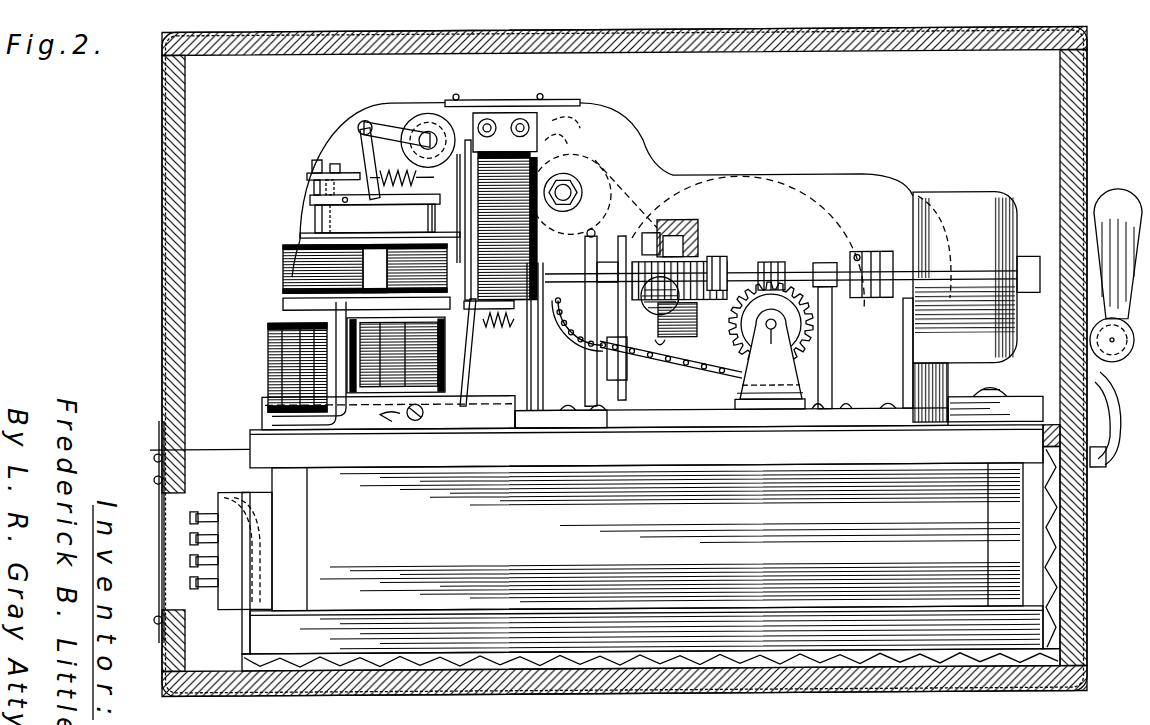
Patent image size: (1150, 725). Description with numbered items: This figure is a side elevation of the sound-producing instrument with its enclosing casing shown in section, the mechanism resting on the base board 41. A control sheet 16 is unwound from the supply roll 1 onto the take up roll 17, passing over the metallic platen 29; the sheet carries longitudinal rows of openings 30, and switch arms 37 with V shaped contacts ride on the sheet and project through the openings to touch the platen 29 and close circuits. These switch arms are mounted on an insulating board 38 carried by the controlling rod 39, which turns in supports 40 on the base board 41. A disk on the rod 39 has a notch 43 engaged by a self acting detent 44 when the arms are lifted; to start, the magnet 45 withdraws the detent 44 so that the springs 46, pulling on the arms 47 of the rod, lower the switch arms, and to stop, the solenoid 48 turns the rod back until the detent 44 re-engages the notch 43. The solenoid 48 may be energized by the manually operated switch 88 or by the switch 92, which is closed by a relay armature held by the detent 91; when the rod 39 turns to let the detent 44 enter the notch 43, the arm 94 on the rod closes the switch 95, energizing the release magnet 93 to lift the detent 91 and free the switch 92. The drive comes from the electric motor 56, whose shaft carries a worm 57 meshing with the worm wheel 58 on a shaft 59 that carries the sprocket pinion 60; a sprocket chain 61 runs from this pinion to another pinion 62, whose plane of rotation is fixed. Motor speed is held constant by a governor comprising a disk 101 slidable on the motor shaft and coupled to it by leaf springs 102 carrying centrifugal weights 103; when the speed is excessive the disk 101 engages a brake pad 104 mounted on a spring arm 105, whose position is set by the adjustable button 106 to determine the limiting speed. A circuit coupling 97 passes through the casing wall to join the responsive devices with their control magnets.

The supply roll 1 is at (302, 228).
The control sheet 16 is at (666, 222).
The take up roll 17 is at (818, 182).
The platen 29 is at (626, 194).
The openings 30 is at (374, 384).
The switch arms 37 is at (590, 120).
The insulating board 38 is at (514, 104).
The controlling rod 39 is at (426, 130).
The supports 40 is at (636, 136).
The base board 41 is at (448, 210).
The notch 43 is at (428, 178).
The detent 44 is at (560, 210).
The magnet 45 is at (538, 140).
The springs 46 is at (380, 170).
The arms 47 is at (497, 220).
The solenoid 48 is at (300, 256).
The electric motor 56 is at (968, 212).
The worm 57 is at (776, 266).
The worm wheel 58 is at (840, 320).
The shaft 59 is at (770, 359).
The sprocket pinion 60 is at (736, 336).
The sprocket chain 61 is at (671, 363).
The pinion 62 is at (636, 364).
The manually operated switch 88 is at (996, 395).
The detent 91 is at (490, 327).
The switch 92 is at (468, 362).
The release magnet 93 is at (280, 358).
The arm 94 is at (308, 180).
The switch 95 is at (336, 220).
The circuit coupling 97 is at (200, 540).
The disk 101 is at (585, 262).
The leaf springs 102 is at (628, 262).
The centrifugal weights 103 is at (690, 220).
The brake pad 104 is at (608, 321).
The spring arm 105 is at (607, 430).
The adjustable button 106 is at (592, 382).